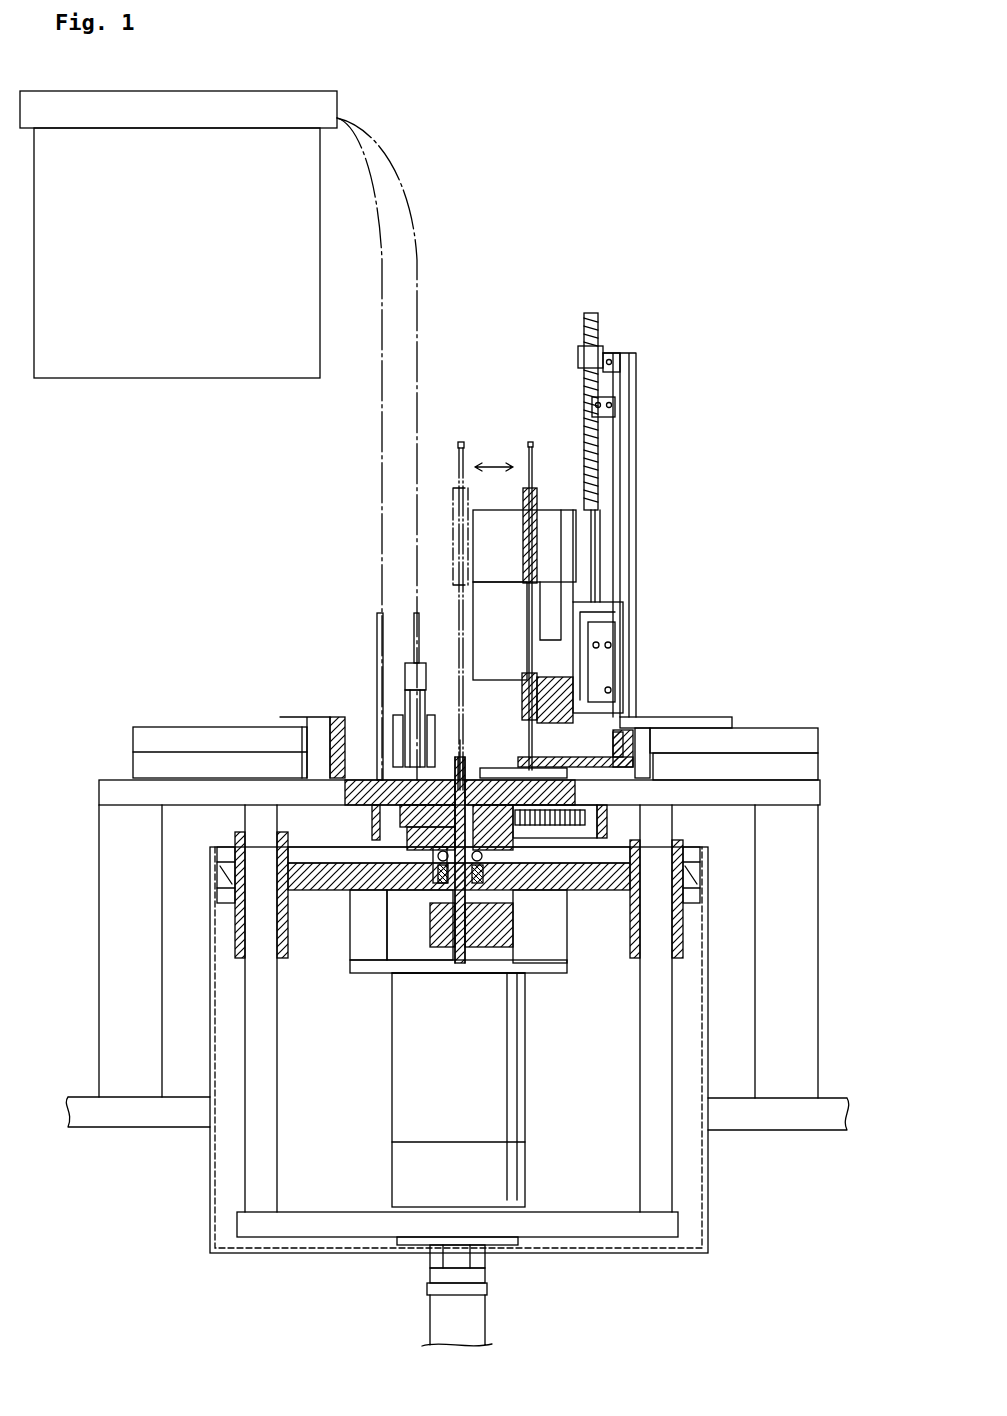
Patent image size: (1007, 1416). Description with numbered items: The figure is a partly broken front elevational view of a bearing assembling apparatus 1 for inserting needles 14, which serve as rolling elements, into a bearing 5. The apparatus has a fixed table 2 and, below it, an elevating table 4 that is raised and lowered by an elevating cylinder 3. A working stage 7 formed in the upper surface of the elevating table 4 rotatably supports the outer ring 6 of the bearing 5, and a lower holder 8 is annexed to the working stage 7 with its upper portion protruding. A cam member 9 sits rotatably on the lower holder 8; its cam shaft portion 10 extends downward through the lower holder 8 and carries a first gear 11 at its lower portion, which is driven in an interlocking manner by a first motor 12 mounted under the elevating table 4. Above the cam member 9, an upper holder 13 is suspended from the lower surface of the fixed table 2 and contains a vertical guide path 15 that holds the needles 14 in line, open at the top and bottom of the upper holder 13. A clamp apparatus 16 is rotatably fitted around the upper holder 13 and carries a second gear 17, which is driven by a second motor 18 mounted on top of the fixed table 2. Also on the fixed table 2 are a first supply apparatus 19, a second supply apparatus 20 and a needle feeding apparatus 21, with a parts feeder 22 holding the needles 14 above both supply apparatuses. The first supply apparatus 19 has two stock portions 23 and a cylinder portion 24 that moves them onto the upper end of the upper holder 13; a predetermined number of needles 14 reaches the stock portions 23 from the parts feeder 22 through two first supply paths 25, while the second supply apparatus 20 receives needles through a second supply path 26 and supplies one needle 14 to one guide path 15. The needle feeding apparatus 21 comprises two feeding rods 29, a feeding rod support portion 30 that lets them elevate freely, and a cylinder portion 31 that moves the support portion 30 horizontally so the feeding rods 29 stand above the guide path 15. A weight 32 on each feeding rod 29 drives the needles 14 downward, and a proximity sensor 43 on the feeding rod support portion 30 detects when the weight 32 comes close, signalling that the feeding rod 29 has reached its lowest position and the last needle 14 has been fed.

The bearing assembling apparatus 1 is at (792, 362).
The fixed table 2 is at (812, 793).
The elevating cylinder 3 is at (480, 1322).
The elevating table 4 is at (612, 860).
The bearing 5 is at (384, 885).
The outer ring 6 is at (395, 876).
The working stage 7 is at (500, 882).
The lower holder 8 is at (505, 906).
The cam member 9 is at (405, 832).
The cam shaft portion 10 is at (470, 990).
The first gear 11 is at (505, 960).
The first motor 12 is at (525, 1024).
The upper holder 13 is at (462, 796).
The needles 14 is at (450, 768).
The guide path 15 is at (345, 790).
The clamp apparatus 16 is at (420, 858).
The second gear 17 is at (405, 813).
The second motor 18 is at (466, 512).
The first supply apparatus 19 is at (208, 728).
The second supply apparatus 20 is at (378, 690).
The needle feeding apparatus 21 is at (636, 628).
The parts feeder 22 is at (202, 376).
The stock portions 23 is at (400, 692).
The cylinder portion 24 is at (140, 765).
The first supply paths 25 is at (382, 378).
The second supply path 26 is at (418, 338).
The feeding rods 29 is at (528, 600).
The feeding rod support portion 30 is at (600, 728).
The cylinder portion 31 is at (747, 740).
The weight 32 is at (538, 500).
The proximity sensor 43 is at (525, 676).